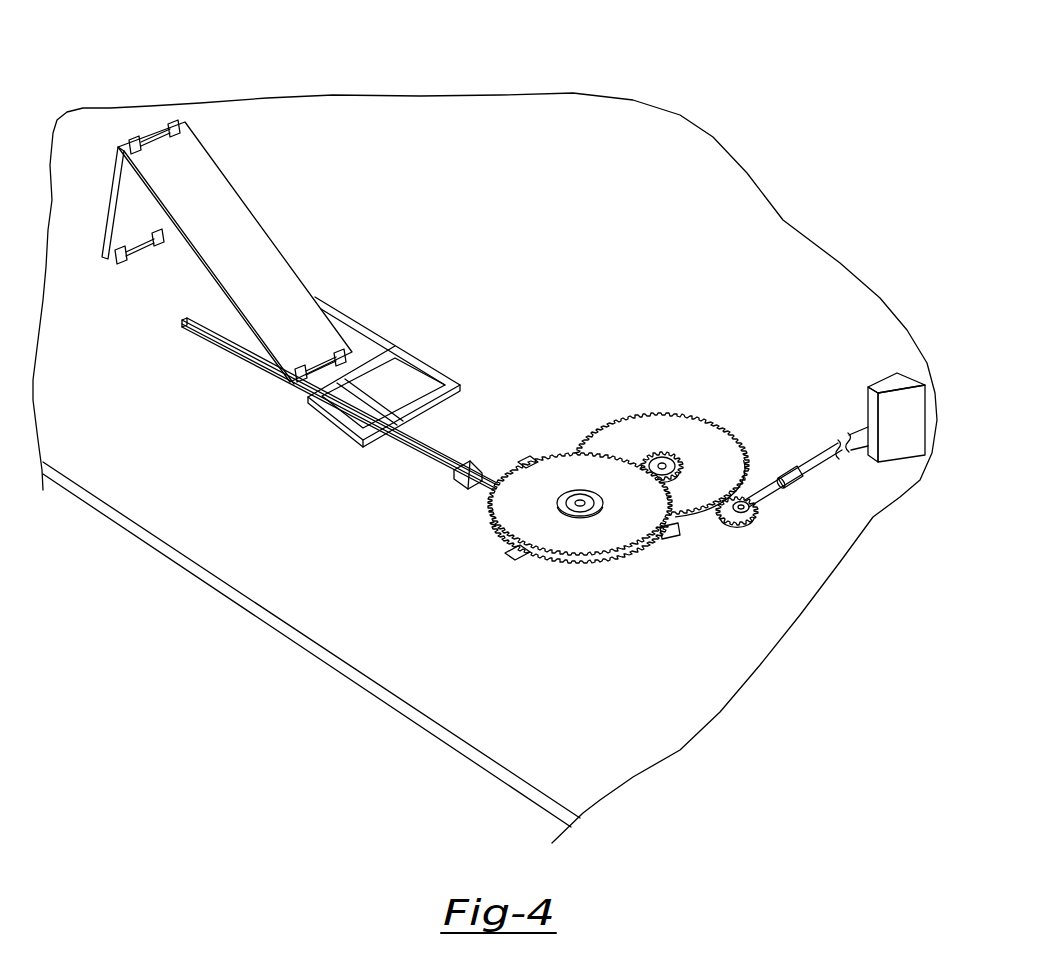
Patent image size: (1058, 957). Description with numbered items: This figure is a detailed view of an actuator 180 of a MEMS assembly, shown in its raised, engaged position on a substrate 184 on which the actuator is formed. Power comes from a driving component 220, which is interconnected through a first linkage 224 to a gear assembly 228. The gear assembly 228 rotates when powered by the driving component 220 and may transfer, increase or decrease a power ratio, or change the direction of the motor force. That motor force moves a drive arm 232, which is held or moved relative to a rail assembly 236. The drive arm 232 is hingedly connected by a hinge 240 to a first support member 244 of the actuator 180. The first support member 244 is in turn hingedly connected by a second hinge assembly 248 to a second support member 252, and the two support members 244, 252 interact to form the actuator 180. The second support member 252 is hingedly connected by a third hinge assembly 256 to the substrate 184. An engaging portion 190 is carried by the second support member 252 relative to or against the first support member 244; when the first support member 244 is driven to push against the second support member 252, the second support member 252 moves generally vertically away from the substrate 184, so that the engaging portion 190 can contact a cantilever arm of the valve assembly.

The actuator 180 is at (490, 188).
The substrate 184 is at (698, 177).
The engaging portion 190 is at (152, 135).
The driving component 220 is at (883, 383).
The first linkage 224 is at (807, 467).
The gear assembly 228 is at (664, 388).
The drive arm 232 is at (368, 406).
The rail assembly 236 is at (438, 380).
The hinge 240 is at (353, 352).
The first support member 244 is at (222, 210).
The second hinge assembly 248 is at (185, 121).
The second support member 252 is at (133, 202).
The third hinge assembly 256 is at (125, 263).